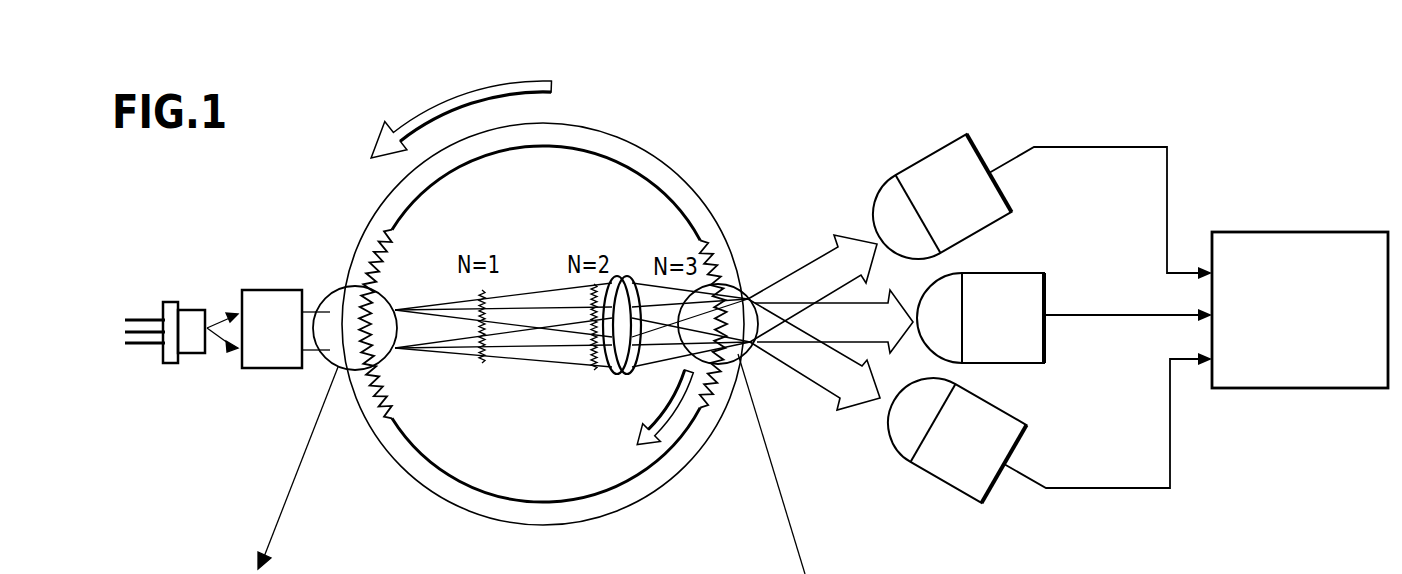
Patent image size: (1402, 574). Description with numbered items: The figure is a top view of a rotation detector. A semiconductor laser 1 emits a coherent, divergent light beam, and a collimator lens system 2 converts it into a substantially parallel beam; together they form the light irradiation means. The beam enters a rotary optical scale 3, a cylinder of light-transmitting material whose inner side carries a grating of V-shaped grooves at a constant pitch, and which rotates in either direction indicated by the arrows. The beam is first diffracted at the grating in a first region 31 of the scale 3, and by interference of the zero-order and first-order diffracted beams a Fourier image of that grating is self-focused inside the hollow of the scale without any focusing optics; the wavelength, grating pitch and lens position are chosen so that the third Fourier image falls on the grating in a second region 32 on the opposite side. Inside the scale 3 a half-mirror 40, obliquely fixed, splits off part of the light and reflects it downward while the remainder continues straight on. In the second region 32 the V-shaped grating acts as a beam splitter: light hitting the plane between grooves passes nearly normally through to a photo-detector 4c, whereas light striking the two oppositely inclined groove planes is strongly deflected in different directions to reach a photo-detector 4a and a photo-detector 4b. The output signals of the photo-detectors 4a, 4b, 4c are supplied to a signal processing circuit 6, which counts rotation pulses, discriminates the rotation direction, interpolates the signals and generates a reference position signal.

The semiconductor laser 1 is at (190, 320).
The collimator lens system 2 is at (258, 298).
The rotary optical scale 3 is at (620, 142).
The first region 31 is at (327, 294).
The second region 32 is at (746, 286).
The half-mirror 40 is at (626, 272).
The photo-detector 4a is at (937, 162).
The photo-detector 4b is at (933, 460).
The photo-detector 4c is at (1022, 282).
The signal processing circuit 6 is at (1238, 246).